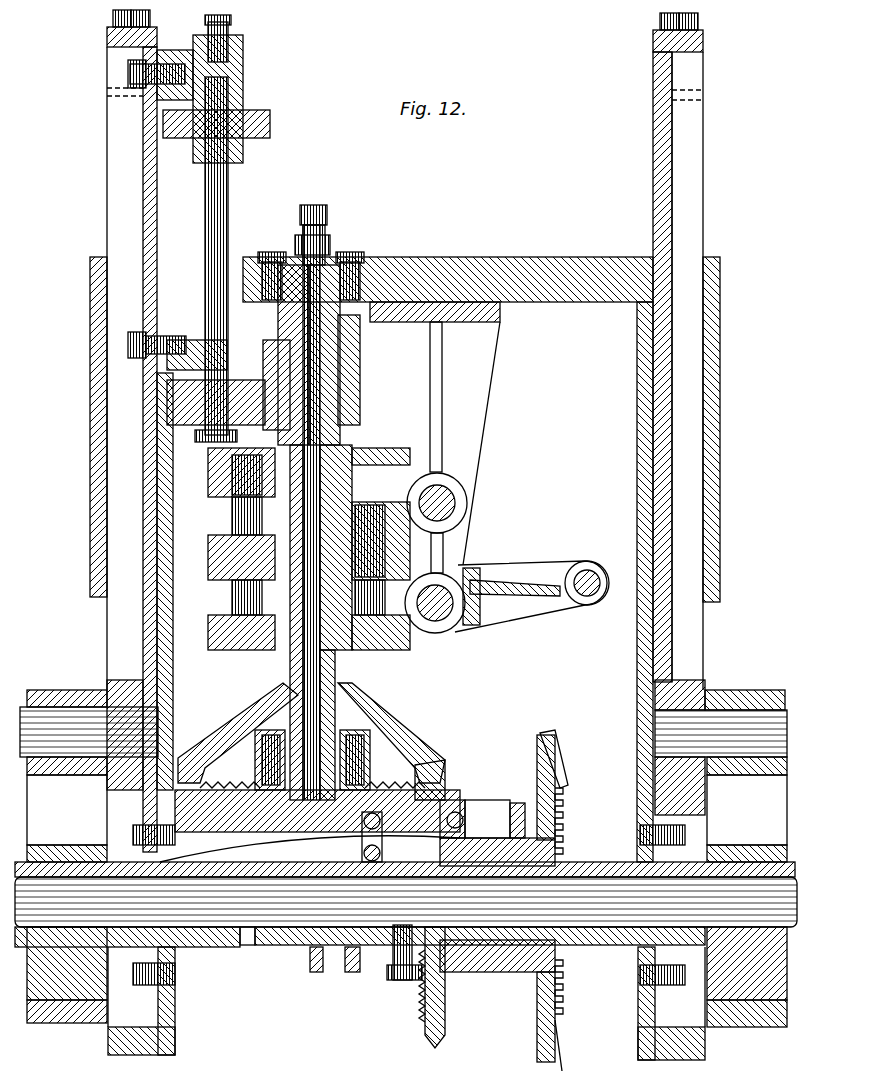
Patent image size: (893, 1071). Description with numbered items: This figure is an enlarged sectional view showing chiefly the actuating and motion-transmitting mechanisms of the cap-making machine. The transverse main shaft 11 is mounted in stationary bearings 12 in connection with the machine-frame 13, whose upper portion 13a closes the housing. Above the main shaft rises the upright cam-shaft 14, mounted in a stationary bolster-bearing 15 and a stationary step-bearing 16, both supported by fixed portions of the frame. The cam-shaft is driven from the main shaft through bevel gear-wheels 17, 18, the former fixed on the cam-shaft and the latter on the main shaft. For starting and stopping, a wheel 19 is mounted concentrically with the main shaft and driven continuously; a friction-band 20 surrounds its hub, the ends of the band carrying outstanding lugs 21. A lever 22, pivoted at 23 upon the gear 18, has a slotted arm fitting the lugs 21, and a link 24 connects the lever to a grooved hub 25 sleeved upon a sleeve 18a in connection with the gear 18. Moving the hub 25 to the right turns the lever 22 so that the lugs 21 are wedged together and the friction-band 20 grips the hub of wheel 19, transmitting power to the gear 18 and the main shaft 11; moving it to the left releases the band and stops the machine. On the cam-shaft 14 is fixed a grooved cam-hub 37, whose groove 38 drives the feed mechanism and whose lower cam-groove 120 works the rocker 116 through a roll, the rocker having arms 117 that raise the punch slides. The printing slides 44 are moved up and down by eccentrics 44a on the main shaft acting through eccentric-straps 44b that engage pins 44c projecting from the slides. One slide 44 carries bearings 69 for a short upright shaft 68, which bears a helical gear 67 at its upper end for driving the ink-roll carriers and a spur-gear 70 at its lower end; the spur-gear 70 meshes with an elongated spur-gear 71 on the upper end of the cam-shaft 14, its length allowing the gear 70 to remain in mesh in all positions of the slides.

The main shaft 11 is at (590, 877).
The stationary bearings 12 is at (185, 947).
The machine-frame 13 is at (173, 550).
The housing top plate 13a is at (590, 302).
The cam-shaft 14 is at (292, 662).
The bolster-bearing 15 is at (333, 258).
The step-bearing 16 is at (290, 828).
The bevel gear-wheel 17 is at (405, 758).
The bevel gear-wheel 18 is at (445, 775).
The sleeve 18a is at (247, 947).
The wheel 19 is at (550, 733).
The friction-band 20 is at (485, 975).
The lugs 21 is at (515, 803).
The lever 22 is at (487, 810).
The pivot 23 is at (458, 810).
The link 24 is at (388, 837).
The grooved hub 25 is at (310, 955).
The cam-hub 37 is at (208, 468).
The groove 38 is at (228, 518).
The slide 44 is at (107, 200).
The eccentric 44a is at (52, 1000).
The eccentric-strap 44b is at (718, 1048).
The pin 44c is at (62, 707).
The helical gear 67 is at (270, 112).
The upright shaft 68 is at (228, 207).
The bearings 69 is at (243, 70).
The spur-gear 70 is at (167, 403).
The spur-gear 71 is at (362, 395).
The rocker 116 is at (440, 620).
The arm 117 is at (520, 570).
The cam-groove 120 is at (228, 600).